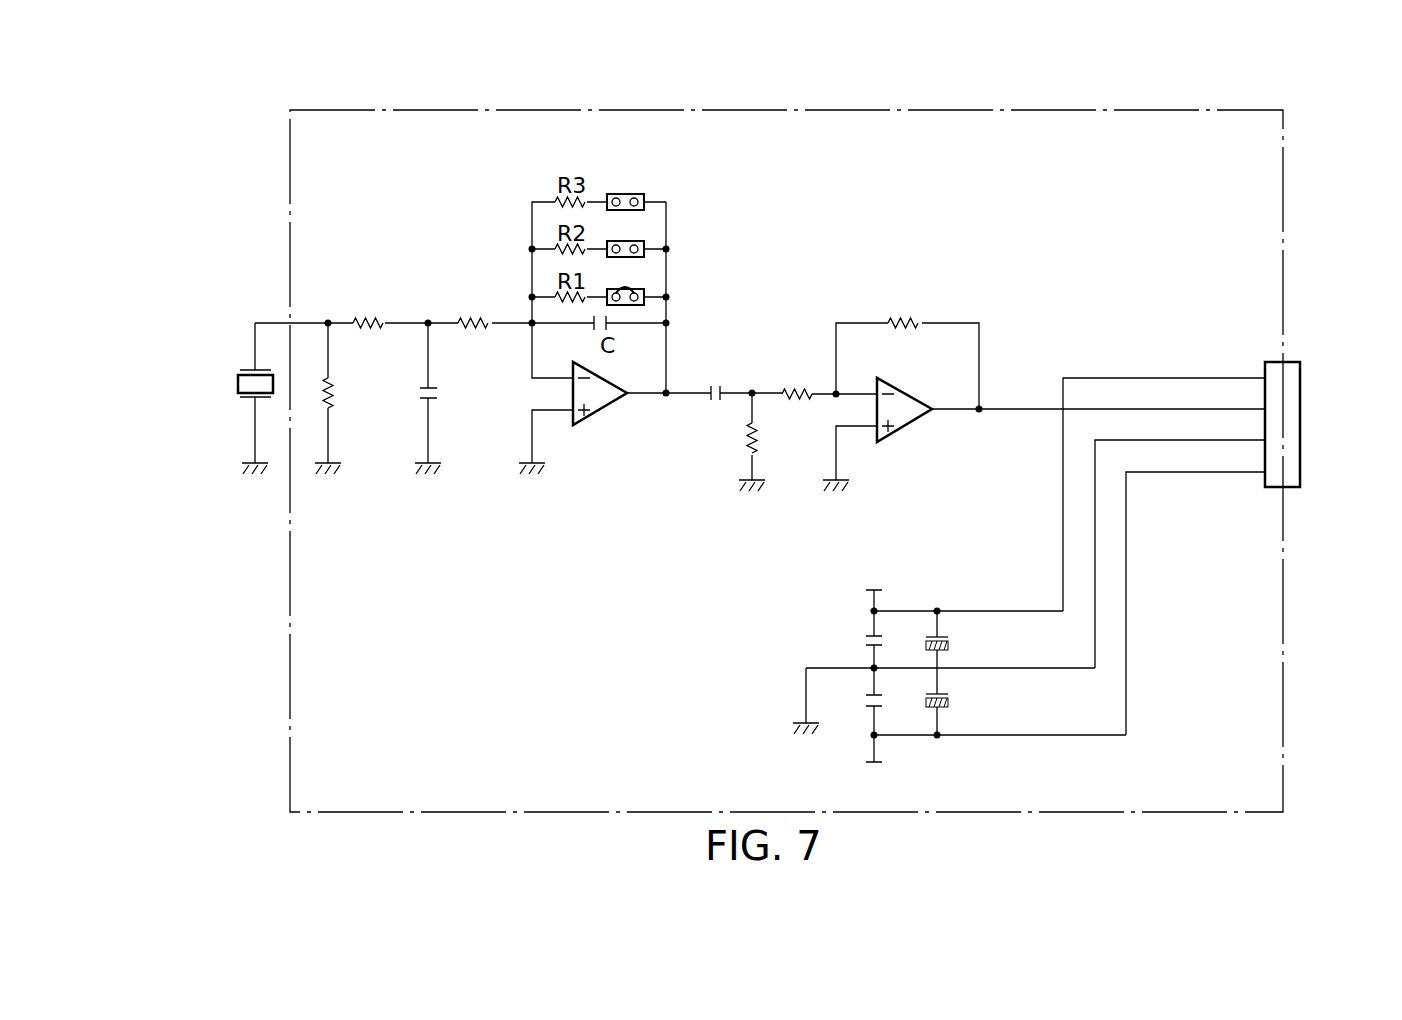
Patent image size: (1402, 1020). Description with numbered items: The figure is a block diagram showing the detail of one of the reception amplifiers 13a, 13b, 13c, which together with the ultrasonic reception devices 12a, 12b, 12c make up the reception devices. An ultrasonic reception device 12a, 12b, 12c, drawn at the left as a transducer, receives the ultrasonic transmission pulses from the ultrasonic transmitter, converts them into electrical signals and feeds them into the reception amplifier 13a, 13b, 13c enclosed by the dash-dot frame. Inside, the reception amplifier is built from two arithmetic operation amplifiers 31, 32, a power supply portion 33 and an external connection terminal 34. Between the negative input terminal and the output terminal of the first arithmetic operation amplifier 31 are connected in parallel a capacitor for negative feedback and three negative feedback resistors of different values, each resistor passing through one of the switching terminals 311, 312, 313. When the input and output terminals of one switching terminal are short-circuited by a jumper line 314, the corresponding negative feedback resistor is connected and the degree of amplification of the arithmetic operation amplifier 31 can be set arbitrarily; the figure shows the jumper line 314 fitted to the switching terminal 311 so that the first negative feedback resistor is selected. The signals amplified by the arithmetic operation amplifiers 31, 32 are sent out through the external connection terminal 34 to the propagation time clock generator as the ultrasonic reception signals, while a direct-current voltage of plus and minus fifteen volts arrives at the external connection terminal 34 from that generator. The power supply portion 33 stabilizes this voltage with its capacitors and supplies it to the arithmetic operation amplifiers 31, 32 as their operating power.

The ultrasonic reception device 12a is at (186, 398).
The ultrasonic reception device 12b is at (186, 398).
The ultrasonic reception device 12c is at (240, 381).
The reception amplifier 13a is at (786, 430).
The reception amplifier 13b is at (786, 430).
The reception amplifier 13c is at (722, 108).
The arithmetic operation amplifier 31 is at (601, 418).
The arithmetic operation amplifier 32 is at (910, 434).
The power supply portion 33 is at (862, 663).
The external connection terminal 34 is at (1265, 368).
The switching terminal 311 is at (644, 304).
The switching terminal 312 is at (644, 244).
The switching terminal 313 is at (644, 197).
The jumper line 314 is at (626, 287).